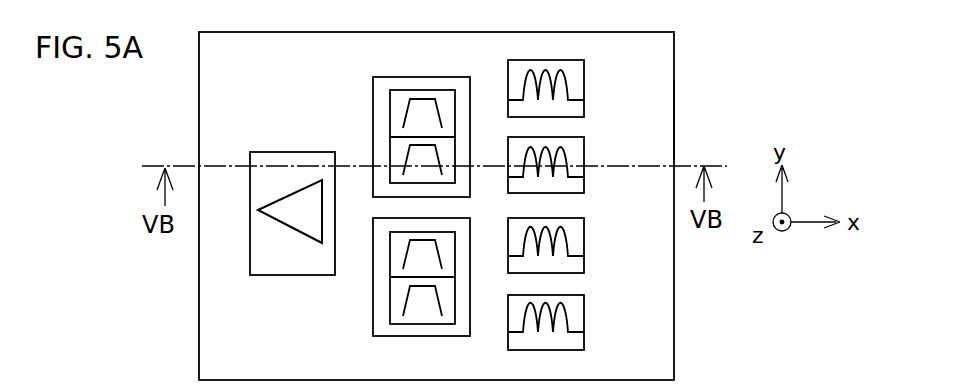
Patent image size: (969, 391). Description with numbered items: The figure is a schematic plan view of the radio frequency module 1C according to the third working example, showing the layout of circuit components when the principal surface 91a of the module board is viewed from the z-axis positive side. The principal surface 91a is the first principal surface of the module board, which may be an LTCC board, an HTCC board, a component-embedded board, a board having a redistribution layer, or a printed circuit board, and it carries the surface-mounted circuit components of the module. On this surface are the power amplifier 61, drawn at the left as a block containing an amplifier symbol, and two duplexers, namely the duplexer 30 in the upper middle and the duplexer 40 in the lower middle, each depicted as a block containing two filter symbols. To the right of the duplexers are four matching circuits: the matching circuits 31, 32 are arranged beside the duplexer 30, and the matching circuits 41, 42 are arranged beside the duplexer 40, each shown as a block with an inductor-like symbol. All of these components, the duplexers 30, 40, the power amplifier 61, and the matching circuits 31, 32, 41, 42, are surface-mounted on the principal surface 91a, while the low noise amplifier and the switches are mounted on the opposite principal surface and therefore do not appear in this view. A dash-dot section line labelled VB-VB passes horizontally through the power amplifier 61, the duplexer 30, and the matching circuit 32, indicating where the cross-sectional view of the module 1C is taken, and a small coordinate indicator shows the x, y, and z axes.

The radio frequency module 1C is at (752, 78).
The principal surface 91a is at (655, 120).
The power amplifier 61 is at (293, 150).
The duplexer 30 is at (398, 77).
The matching circuit 31 is at (584, 88).
The matching circuit 32 is at (584, 177).
The duplexer 40 is at (420, 337).
The matching circuit 41 is at (584, 312).
The matching circuit 42 is at (584, 240).